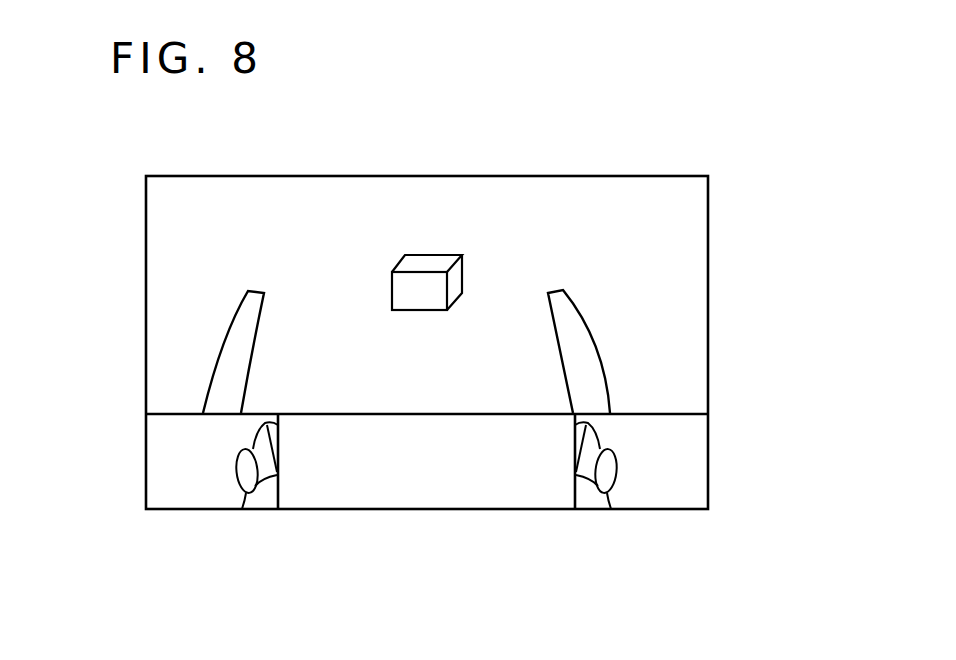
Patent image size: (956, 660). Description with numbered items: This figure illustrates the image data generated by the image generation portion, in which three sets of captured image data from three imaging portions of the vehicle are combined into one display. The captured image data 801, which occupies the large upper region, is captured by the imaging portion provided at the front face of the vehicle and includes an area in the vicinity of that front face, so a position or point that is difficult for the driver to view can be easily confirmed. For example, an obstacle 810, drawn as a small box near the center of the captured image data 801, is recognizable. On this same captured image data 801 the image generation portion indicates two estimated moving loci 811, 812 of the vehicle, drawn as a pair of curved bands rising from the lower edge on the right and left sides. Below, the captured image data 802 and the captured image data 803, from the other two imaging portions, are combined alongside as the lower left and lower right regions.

The captured image data 801 is at (700, 322).
The captured image data 802 is at (186, 484).
The captured image data 803 is at (656, 482).
The obstacle 810 is at (423, 255).
The estimated moving locus 811 is at (607, 377).
The estimated moving locus 812 is at (208, 377).